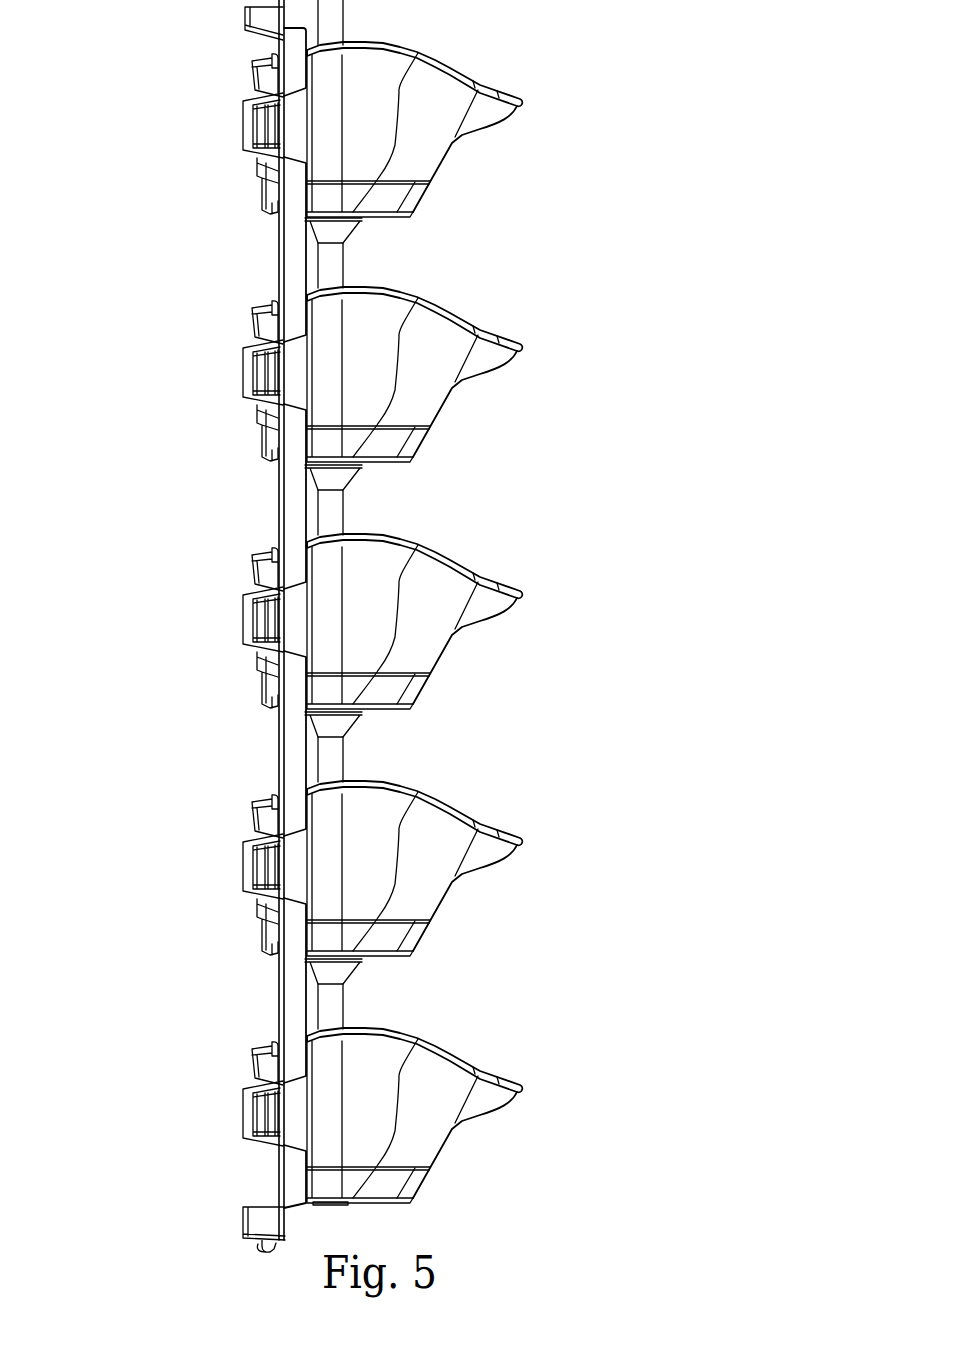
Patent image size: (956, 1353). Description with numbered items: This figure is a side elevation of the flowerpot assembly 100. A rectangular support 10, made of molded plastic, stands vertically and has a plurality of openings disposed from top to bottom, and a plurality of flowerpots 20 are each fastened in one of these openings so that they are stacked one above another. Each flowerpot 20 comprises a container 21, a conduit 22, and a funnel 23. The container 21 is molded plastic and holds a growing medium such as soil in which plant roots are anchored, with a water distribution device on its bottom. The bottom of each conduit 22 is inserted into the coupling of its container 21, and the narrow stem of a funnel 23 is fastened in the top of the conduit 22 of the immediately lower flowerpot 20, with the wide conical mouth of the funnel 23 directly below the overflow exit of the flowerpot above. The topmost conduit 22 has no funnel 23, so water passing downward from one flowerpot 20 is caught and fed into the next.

The flowerpot assembly 100 is at (138, 93).
The rectangular support 10 is at (293, 243).
The flowerpot 20 is at (556, 68).
The container 21 is at (491, 121).
The conduit 22 is at (343, 20).
The funnel 23 is at (361, 226).